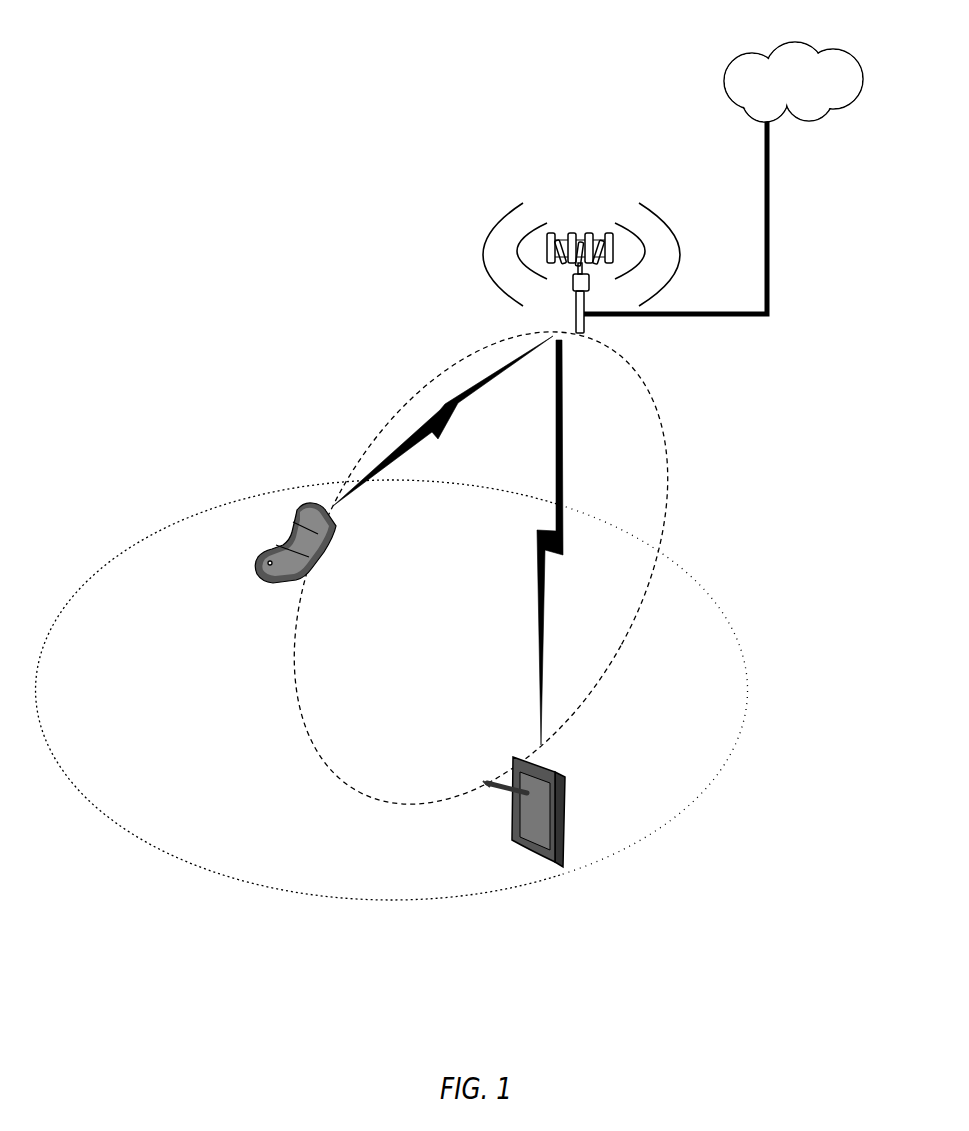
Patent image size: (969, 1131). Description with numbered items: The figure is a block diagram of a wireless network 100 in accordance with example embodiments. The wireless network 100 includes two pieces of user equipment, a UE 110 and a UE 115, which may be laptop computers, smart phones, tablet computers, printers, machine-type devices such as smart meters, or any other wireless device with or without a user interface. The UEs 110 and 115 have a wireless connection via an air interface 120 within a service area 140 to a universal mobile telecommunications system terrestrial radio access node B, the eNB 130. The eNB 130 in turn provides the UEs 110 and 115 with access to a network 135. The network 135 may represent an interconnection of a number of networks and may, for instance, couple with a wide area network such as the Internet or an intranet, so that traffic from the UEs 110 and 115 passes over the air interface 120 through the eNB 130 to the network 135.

The wireless network 100 is at (193, 57).
The user equipment 110 is at (300, 492).
The user equipment 115 is at (563, 777).
The air interface 120 is at (445, 377).
The eNB 130 is at (585, 226).
The network 135 is at (727, 62).
The service area 140 is at (80, 580).